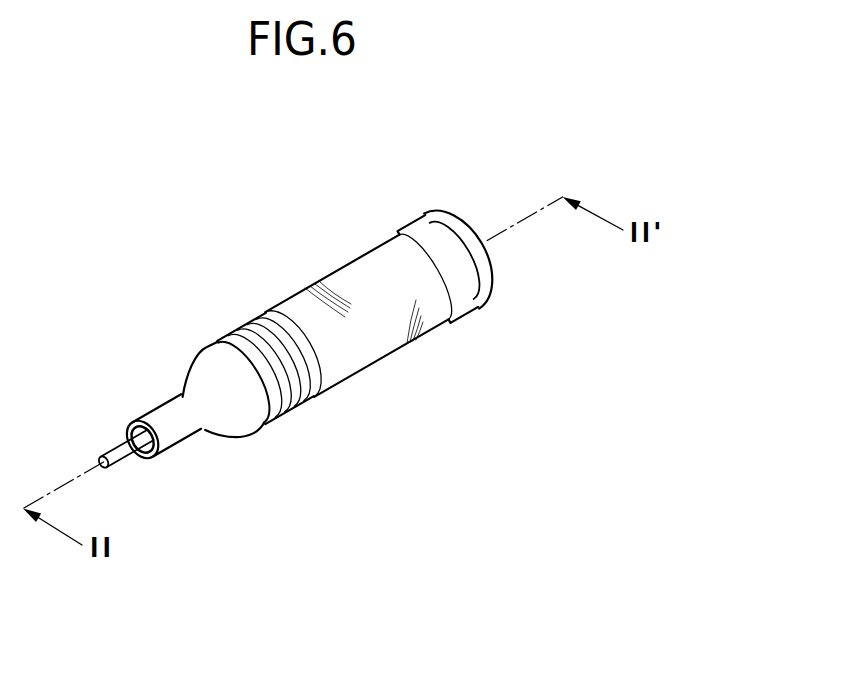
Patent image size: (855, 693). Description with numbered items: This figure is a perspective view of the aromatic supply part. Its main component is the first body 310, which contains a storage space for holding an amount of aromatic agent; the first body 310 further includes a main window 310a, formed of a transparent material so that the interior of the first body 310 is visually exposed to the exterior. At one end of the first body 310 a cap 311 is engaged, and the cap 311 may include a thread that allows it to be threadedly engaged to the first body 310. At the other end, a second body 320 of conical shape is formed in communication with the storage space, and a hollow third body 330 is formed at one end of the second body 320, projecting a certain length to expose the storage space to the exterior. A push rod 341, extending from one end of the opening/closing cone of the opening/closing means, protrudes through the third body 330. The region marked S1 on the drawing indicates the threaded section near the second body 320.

The first body 310 is at (352, 382).
The main window 310a is at (375, 345).
The cap 311 is at (487, 277).
The second body 320 is at (228, 420).
The third body 330 is at (176, 431).
The push rod 341 is at (123, 455).
The threaded section S1 is at (259, 331).